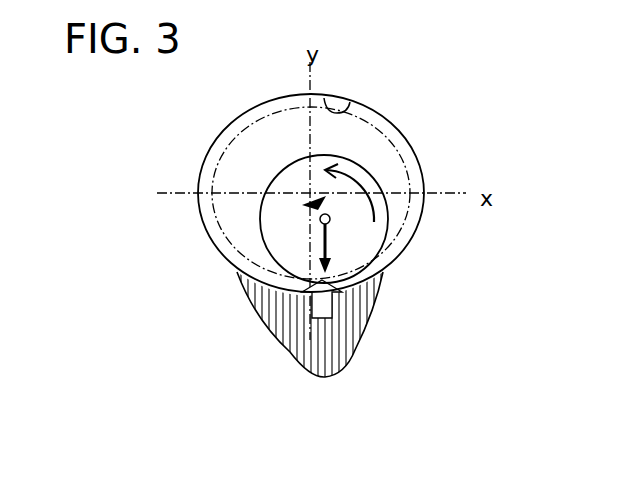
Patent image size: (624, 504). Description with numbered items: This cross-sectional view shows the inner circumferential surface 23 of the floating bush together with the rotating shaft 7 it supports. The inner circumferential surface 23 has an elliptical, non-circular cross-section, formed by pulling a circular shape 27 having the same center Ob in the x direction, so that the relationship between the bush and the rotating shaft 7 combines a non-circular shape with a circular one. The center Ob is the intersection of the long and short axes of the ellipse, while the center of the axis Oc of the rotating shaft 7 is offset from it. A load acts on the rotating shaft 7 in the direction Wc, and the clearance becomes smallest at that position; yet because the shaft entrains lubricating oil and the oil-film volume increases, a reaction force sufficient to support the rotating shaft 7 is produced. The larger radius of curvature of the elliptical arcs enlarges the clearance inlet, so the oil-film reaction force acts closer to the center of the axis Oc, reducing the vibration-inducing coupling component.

The rotating shaft 7 is at (367, 169).
The inner circumferential surface 23 is at (350, 106).
The circular shape 27 is at (212, 144).
The center Ob is at (312, 197).
The center of the axis Oc is at (330, 221).
The direction of load Wc is at (330, 251).